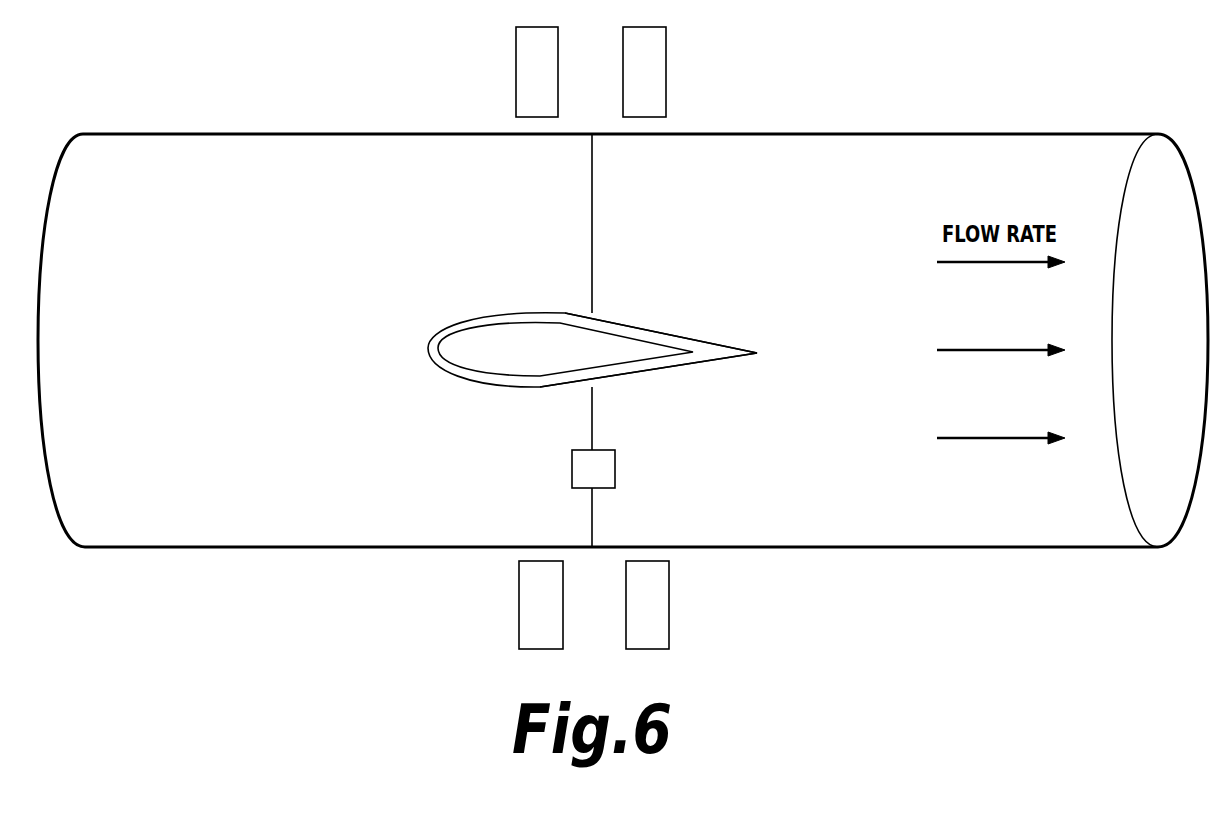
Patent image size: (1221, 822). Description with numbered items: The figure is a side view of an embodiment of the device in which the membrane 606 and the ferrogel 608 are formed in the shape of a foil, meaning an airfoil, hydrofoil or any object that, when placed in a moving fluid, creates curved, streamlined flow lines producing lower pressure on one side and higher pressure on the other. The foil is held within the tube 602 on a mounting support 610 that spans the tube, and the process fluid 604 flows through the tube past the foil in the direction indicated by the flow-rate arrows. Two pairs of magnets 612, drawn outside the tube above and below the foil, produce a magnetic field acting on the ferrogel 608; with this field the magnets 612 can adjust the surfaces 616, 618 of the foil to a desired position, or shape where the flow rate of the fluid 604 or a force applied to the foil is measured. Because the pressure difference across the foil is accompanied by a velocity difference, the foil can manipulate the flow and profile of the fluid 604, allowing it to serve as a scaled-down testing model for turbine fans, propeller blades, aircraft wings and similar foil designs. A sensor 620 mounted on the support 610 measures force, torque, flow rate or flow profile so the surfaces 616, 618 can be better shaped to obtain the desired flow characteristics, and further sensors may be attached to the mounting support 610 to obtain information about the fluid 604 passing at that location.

The pipe 602 is at (170, 133).
The process fluid 604 is at (192, 326).
The membrane 606 is at (492, 387).
The ferrogel 608 is at (541, 361).
The mounting support 610 is at (591, 248).
The magnets 612 is at (516, 70).
The surface of the foil 616 is at (637, 325).
The surface of the foil 618 is at (641, 375).
The sensor 620 is at (615, 470).